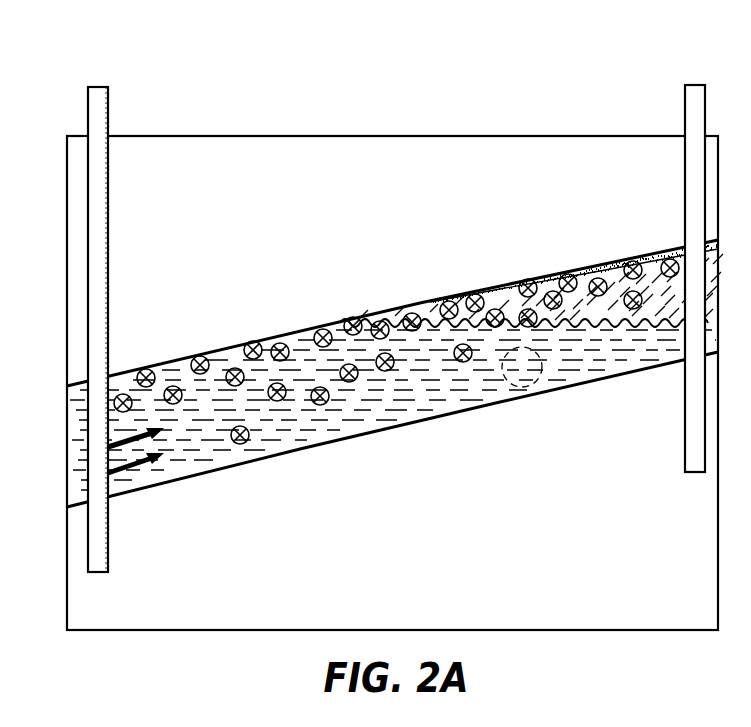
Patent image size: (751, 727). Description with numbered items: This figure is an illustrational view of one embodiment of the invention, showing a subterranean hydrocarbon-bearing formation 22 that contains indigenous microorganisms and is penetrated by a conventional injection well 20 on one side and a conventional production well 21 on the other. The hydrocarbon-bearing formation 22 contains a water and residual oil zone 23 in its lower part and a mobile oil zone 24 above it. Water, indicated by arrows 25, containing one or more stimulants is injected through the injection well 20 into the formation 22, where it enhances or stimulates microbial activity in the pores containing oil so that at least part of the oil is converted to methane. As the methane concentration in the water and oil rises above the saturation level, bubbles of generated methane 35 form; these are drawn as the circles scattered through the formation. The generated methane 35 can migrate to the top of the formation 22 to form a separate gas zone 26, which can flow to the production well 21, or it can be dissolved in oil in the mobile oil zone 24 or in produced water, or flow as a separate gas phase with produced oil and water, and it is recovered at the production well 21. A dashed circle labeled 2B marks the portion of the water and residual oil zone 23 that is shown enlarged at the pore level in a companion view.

The injection well 20 is at (108, 98).
The production well 21 is at (685, 98).
The formation 22 is at (188, 348).
The water and residual oil zone 23 is at (420, 416).
The mobile oil zone 24 is at (512, 300).
The water and stimulant injection 25 is at (112, 450).
The gas zone 26 is at (583, 267).
The generated methane 35 is at (338, 322).
The detail region of FIG. 2B is at (536, 383).